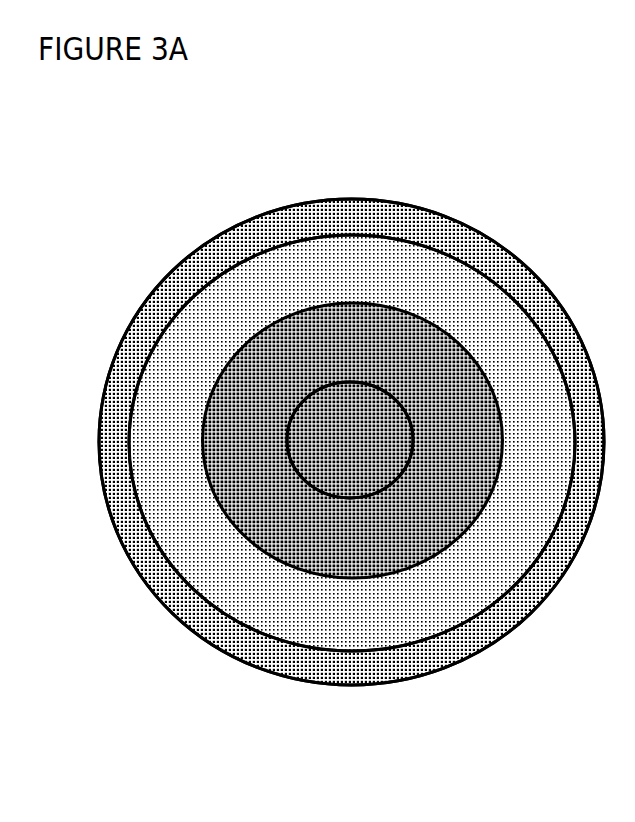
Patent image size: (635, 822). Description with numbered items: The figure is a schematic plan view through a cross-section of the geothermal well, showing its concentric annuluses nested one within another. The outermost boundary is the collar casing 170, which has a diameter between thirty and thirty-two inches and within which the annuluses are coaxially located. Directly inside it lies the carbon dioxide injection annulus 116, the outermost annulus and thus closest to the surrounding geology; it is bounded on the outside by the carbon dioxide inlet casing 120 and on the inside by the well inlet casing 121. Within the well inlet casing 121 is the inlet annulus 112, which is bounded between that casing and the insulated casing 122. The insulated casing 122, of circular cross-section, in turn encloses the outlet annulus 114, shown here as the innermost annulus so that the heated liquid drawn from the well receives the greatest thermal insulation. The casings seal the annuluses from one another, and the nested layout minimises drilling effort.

The collar casing 170 is at (187, 258).
The carbon dioxide injection annulus 116 is at (372, 282).
The inlet annulus 112 is at (372, 360).
The outlet annulus 114 is at (372, 444).
The carbon dioxide inlet casing 120 is at (140, 525).
The well inlet casing 121 is at (260, 550).
The insulated casing 122 is at (355, 499).